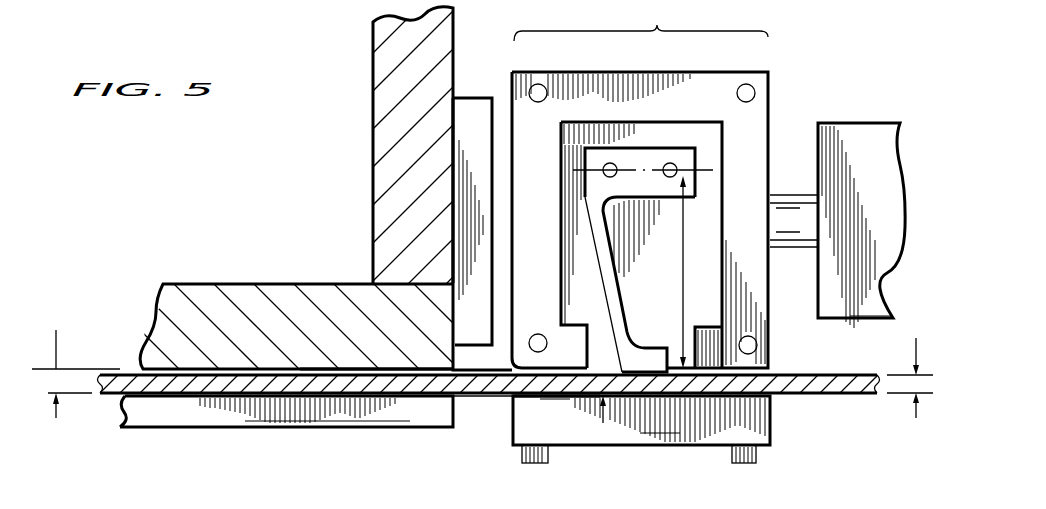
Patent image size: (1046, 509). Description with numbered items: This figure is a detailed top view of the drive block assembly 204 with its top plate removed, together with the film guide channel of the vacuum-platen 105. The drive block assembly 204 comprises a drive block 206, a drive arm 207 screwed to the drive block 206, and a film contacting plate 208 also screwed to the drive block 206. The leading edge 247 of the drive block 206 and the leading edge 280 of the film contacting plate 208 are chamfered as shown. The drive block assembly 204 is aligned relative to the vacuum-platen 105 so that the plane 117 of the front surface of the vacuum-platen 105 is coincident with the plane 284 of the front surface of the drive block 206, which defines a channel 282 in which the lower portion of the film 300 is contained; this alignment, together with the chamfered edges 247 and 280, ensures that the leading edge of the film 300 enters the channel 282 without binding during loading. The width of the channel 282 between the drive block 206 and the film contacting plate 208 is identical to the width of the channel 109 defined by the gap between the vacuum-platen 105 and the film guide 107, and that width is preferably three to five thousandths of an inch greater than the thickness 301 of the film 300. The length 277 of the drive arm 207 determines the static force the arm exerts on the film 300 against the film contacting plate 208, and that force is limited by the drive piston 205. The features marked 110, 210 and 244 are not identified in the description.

The vacuum-platen 105 is at (280, 296).
The film guide 107 is at (226, 416).
The channel 109 is at (76, 387).
The housing wall 110 is at (397, 90).
The plane of the front surface of the vacuum-platen 117 is at (378, 366).
The drive block assembly 204 is at (641, 23).
The drive piston 205 is at (862, 132).
The drive block 206 is at (588, 92).
The drive arm 207 is at (648, 160).
The film contacting plate 208 is at (696, 436).
The guide plate 210 is at (483, 108).
The mounting holes 244 is at (540, 84).
The leading edge of the drive block 247 is at (480, 396).
The length of the drive arm 277 is at (666, 272).
The leading edge of the film contacting plate 280 is at (514, 397).
The channel 282 is at (595, 420).
The plane of the front surface of the drive block 284 is at (603, 356).
The film 300 is at (834, 386).
The thickness of the film 301 is at (910, 392).